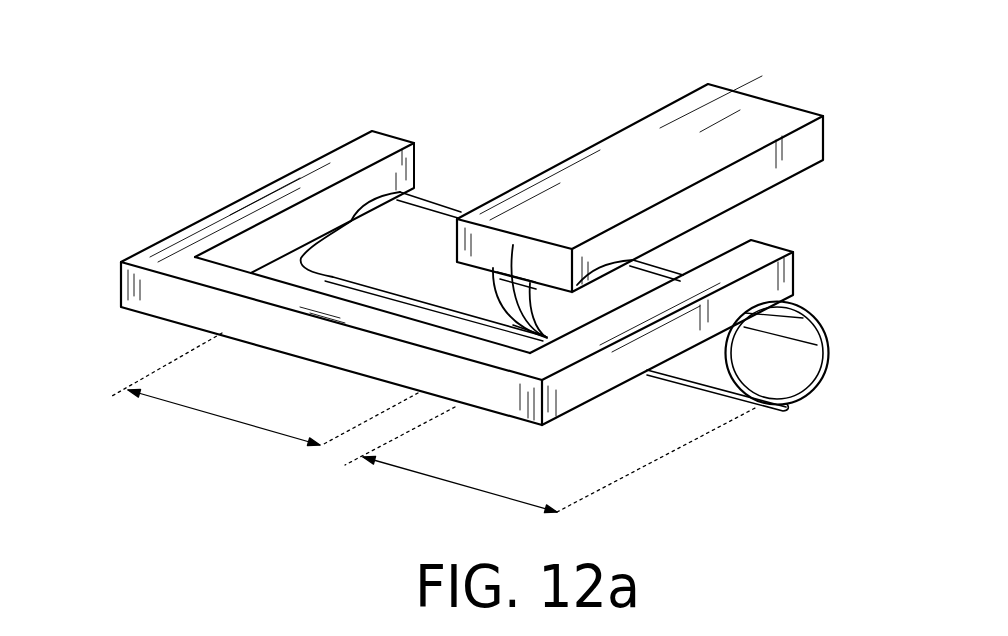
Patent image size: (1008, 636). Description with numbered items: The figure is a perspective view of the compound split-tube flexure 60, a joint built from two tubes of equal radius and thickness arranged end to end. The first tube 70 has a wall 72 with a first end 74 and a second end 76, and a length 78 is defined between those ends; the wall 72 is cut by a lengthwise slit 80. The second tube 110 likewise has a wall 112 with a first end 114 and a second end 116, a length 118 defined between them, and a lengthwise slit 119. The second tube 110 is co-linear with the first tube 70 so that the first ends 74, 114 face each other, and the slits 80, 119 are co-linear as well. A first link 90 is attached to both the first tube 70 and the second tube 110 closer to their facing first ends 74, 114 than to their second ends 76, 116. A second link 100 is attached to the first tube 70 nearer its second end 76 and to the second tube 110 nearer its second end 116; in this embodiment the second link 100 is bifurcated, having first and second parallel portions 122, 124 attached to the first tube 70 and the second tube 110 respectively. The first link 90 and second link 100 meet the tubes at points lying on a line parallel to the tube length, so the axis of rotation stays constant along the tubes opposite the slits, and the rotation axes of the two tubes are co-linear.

The compound split-tube flexure 60 is at (166, 106).
The first tube 70 is at (453, 185).
The wall 72 is at (403, 272).
The first end 74 is at (473, 298).
The second end 76 is at (383, 203).
The length 78 is at (223, 418).
The lengthwise slit 80 is at (513, 245).
The first link 90 is at (822, 168).
The second link 100 is at (347, 352).
The second tube 110 is at (748, 421).
The wall 112 is at (640, 262).
The first end 114 is at (572, 326).
The second end 116 is at (819, 324).
The length 118 is at (452, 483).
The lengthwise slit 119 is at (788, 409).
The first parallel portion 122 is at (219, 222).
The second parallel portion 124 is at (590, 367).